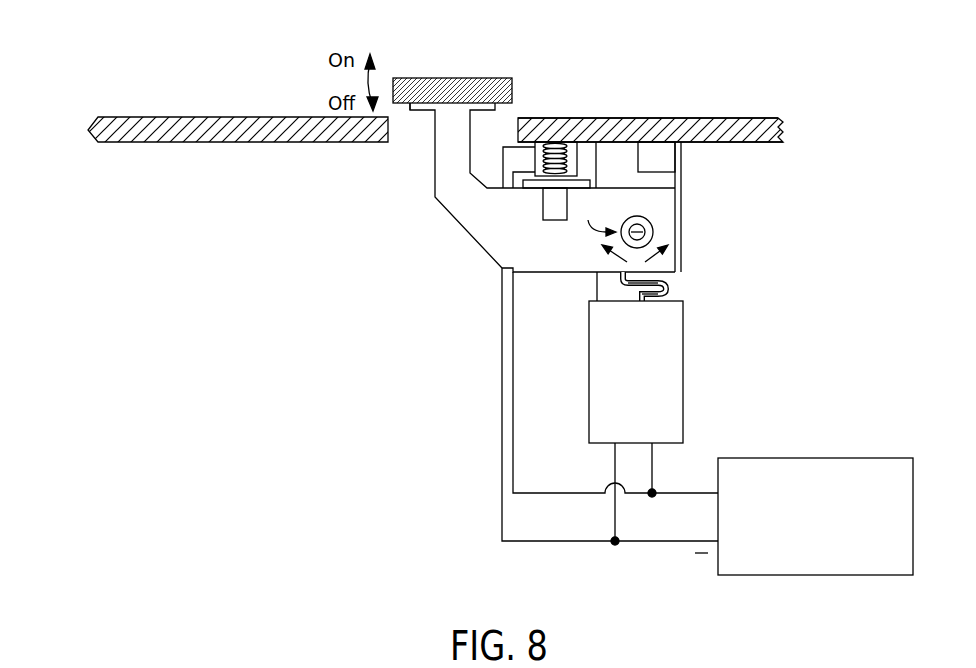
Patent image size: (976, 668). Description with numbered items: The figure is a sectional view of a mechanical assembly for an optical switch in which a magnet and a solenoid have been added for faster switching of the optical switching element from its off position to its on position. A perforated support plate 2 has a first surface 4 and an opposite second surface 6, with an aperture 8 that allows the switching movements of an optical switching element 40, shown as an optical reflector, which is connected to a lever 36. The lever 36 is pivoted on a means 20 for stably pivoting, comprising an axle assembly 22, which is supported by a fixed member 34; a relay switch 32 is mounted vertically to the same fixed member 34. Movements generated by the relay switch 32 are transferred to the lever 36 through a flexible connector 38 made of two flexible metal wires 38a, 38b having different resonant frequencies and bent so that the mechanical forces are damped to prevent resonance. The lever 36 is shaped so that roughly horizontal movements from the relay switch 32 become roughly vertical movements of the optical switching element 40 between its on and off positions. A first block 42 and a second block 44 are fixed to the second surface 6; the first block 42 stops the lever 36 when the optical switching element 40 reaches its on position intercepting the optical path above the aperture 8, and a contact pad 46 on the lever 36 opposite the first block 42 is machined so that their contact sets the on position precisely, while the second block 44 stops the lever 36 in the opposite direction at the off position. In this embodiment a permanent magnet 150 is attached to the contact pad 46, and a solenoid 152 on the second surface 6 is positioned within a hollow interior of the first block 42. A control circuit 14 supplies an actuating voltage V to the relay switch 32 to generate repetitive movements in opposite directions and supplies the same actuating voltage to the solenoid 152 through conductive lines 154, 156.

The perforated support plate 2 is at (695, 132).
The first surface 4 is at (642, 118).
The second surface 6 is at (760, 145).
The aperture 8 is at (410, 153).
The control circuit 14 is at (813, 472).
The means for stably pivoting a lever 20 is at (597, 215).
The axle assembly 22 is at (653, 232).
The relay switch 32 is at (675, 373).
The fixed member 34 is at (658, 182).
The lever 36 is at (463, 205).
The flexible connector 38 is at (686, 279).
The flexible metal wire 38a is at (672, 293).
The flexible metal wire 38b is at (623, 280).
The optical switching element 40 is at (465, 78).
The first block 42 is at (572, 160).
The second block 44 is at (663, 158).
The contact pad 46 is at (537, 193).
The permanent magnet 150 is at (553, 221).
The solenoid 152 is at (553, 143).
The conductive line 154 is at (540, 493).
The conductive line 156 is at (548, 543).